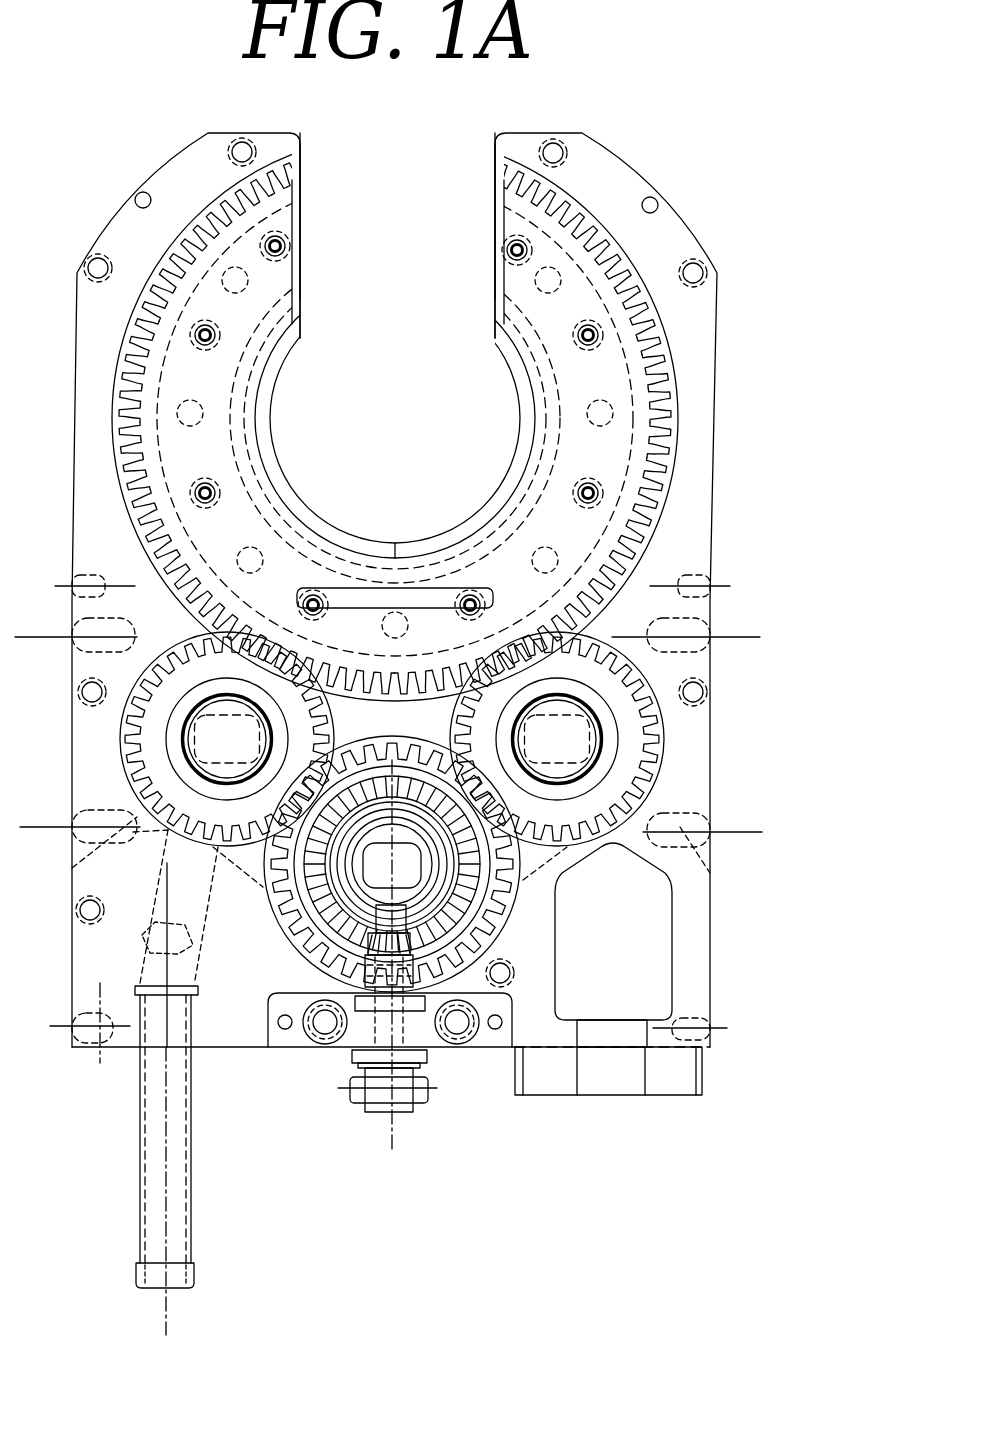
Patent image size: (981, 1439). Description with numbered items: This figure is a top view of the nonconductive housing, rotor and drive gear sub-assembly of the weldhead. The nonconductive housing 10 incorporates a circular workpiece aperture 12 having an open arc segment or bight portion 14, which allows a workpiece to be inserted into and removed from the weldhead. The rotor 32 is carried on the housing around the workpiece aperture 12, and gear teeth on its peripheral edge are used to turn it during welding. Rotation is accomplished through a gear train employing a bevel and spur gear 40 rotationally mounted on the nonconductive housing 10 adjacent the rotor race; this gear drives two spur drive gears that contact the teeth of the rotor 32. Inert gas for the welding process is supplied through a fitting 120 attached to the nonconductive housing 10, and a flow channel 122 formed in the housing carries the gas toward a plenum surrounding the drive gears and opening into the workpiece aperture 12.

The nonconductive housing 10 is at (717, 432).
The circular workpiece aperture 12 is at (493, 307).
The open arc segment or bight portion 14 is at (495, 220).
The rotor 32 is at (568, 197).
The bevel and spur gear 40 is at (487, 922).
The fitting 120 is at (192, 1203).
The flow channel 122 is at (207, 967).